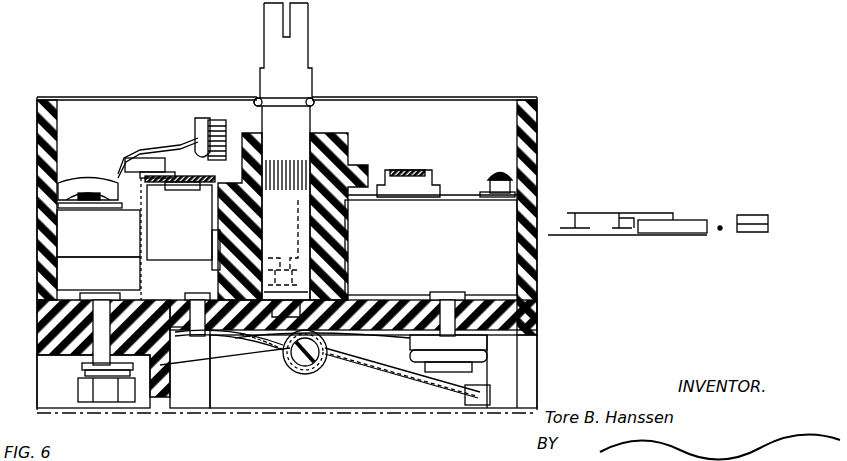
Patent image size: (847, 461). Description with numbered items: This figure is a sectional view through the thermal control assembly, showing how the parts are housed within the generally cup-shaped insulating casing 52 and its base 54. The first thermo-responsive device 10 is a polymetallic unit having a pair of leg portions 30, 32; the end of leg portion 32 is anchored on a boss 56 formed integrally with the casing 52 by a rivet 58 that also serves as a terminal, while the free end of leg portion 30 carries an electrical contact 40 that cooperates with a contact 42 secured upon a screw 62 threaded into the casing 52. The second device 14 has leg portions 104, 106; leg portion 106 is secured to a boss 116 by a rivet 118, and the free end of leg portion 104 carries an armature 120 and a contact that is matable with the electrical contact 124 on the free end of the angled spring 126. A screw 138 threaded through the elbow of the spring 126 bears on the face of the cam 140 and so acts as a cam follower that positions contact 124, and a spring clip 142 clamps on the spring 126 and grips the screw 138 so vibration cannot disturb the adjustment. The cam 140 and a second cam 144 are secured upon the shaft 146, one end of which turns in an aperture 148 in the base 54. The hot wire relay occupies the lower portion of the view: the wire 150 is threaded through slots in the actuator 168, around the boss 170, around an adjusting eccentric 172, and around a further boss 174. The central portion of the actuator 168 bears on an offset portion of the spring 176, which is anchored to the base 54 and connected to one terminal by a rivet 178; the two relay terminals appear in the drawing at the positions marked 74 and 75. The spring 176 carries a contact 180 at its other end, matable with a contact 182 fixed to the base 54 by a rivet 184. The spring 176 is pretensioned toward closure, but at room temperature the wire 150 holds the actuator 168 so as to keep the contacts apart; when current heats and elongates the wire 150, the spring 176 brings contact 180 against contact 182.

The device 10 is at (490, 170).
The device 14 is at (176, 192).
The leg portion 30 is at (537, 142).
The leg portion 32 is at (415, 176).
The electrical contact 40 is at (508, 176).
The contact 42 is at (506, 186).
The insulating casing 52 is at (553, 258).
The base 54 is at (360, 292).
The boss 56 is at (385, 190).
The rivet 58 is at (395, 170).
The screw 62 is at (516, 192).
The support post 74 is at (180, 340).
The lever arm 75 is at (410, 340).
The leg portion 104 is at (90, 238).
The leg portion 106 is at (196, 212).
The boss 116 is at (140, 256).
The rivet 118 is at (178, 175).
The armature 120 is at (88, 210).
The electrical contact 124 is at (85, 178).
The angled spring 126 is at (197, 118).
The screw 138 is at (220, 120).
The cam 140 is at (330, 165).
The spring clip 142 is at (140, 154).
The cam 144 is at (350, 266).
The shaft 146 is at (305, 118).
The aperture 148 is at (283, 352).
The wire 150 is at (262, 350).
The actuator 168 is at (308, 378).
The boss 170 is at (170, 408).
The adjusting eccentric 172 is at (100, 398).
The boss 174 is at (480, 405).
The spring 176 is at (337, 370).
The rivet 178 is at (252, 345).
The contact 180 is at (487, 354).
The contact 182 is at (487, 340).
The rivet 184 is at (448, 292).